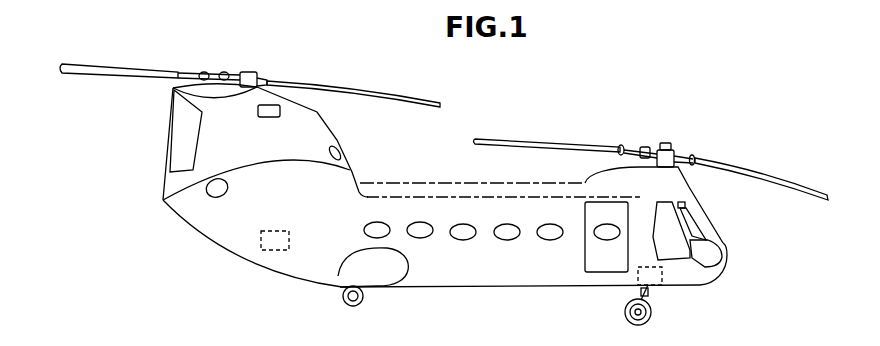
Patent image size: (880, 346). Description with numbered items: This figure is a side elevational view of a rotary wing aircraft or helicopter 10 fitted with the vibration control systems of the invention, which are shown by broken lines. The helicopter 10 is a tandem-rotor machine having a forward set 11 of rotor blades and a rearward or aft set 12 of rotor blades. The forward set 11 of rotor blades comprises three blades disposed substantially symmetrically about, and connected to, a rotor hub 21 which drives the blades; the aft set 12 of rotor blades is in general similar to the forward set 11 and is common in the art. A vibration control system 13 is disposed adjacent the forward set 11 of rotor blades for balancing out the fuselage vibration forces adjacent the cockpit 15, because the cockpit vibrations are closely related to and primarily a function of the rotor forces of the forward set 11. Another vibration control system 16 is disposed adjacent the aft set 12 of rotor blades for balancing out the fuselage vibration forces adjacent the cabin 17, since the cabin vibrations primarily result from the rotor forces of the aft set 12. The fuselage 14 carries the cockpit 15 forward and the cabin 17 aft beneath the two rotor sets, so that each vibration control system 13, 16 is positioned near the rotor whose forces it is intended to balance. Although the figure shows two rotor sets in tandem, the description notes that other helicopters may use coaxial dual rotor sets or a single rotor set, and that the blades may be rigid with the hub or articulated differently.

The helicopter 10 is at (480, 287).
The forward set of rotor blades 11 is at (549, 140).
The aft set of rotor blades 12 is at (328, 83).
The vibration control system 13 is at (647, 266).
The fuselage 14 is at (551, 276).
The cockpit 15 is at (700, 213).
The vibration control system 16 is at (290, 240).
The cabin 17 is at (282, 266).
The rotor hub 21 is at (668, 150).